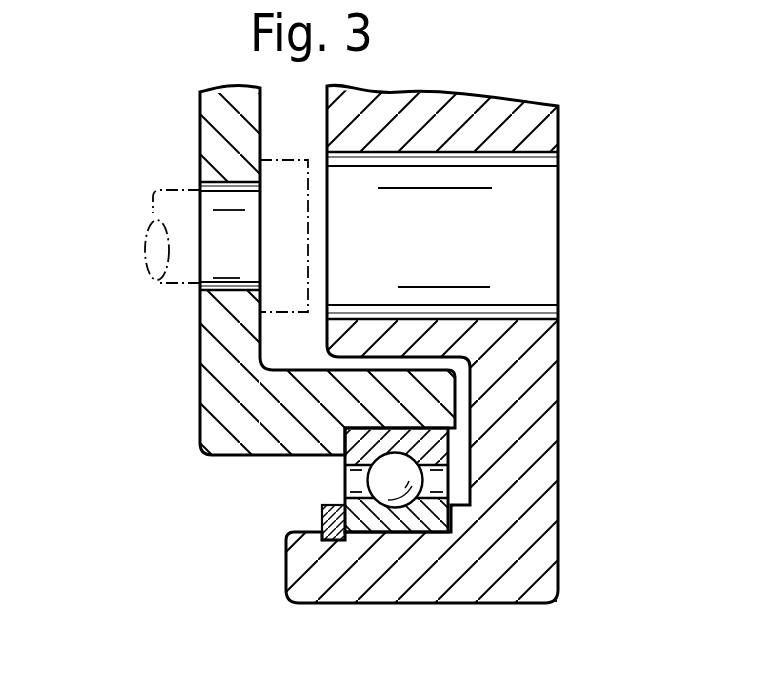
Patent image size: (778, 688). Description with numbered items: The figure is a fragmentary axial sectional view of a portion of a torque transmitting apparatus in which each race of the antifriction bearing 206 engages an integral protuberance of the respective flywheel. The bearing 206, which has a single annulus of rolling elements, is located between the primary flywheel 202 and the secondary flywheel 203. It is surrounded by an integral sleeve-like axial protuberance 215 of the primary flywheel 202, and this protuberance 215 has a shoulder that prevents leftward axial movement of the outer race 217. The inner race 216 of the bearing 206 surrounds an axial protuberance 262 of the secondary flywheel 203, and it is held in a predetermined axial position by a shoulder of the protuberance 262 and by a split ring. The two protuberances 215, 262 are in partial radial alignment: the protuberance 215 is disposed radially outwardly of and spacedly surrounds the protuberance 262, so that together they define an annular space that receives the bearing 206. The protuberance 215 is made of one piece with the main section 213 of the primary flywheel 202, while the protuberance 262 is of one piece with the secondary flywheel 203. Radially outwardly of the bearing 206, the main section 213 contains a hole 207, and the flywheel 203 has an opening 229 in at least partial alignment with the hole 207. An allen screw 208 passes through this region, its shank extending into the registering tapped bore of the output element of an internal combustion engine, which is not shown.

The primary flywheel 202 is at (200, 325).
The secondary flywheel 203 is at (558, 125).
The antifriction bearing 206 is at (343, 482).
The hole 207 is at (242, 180).
The allen screw 208 is at (155, 223).
The main section 213 is at (213, 138).
The axial protuberance 215 is at (357, 393).
The inner race 216 is at (368, 523).
The outer race 217 is at (435, 447).
The opening 229 is at (435, 143).
The axial protuberance 262 is at (312, 582).